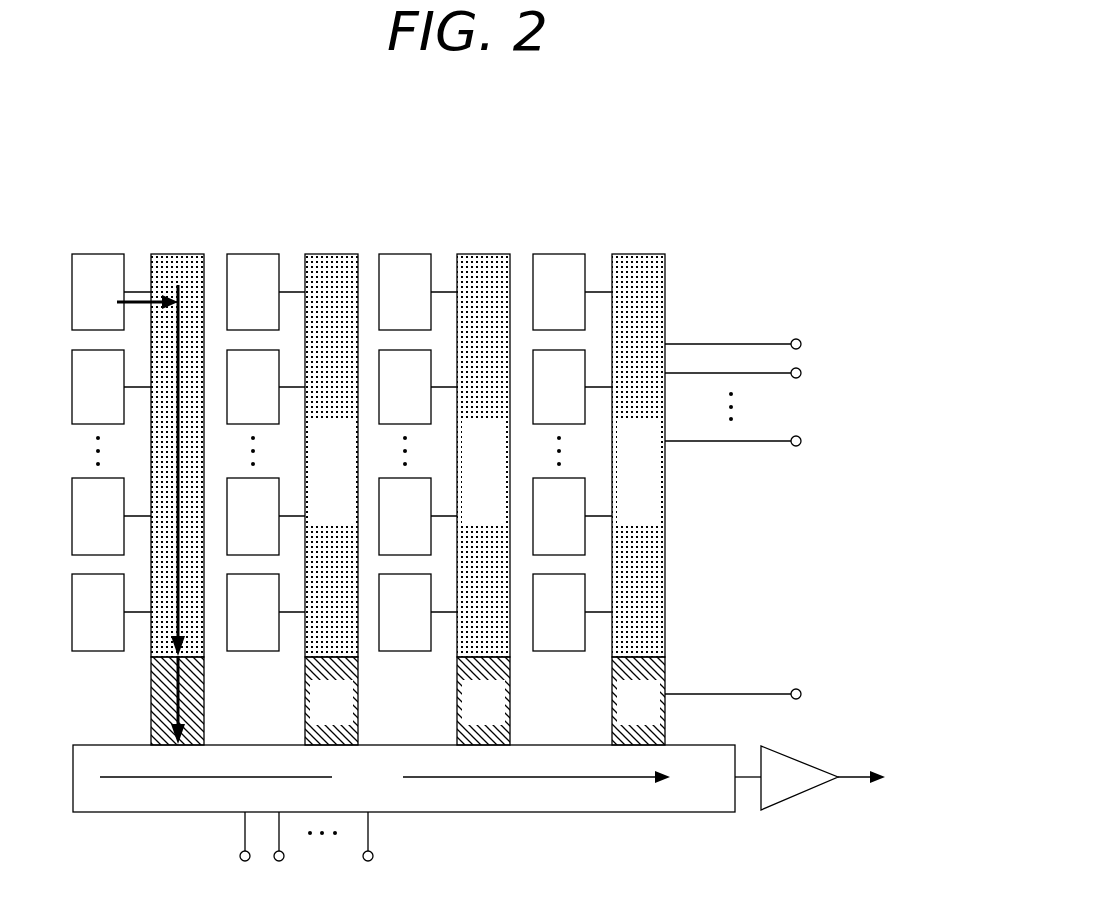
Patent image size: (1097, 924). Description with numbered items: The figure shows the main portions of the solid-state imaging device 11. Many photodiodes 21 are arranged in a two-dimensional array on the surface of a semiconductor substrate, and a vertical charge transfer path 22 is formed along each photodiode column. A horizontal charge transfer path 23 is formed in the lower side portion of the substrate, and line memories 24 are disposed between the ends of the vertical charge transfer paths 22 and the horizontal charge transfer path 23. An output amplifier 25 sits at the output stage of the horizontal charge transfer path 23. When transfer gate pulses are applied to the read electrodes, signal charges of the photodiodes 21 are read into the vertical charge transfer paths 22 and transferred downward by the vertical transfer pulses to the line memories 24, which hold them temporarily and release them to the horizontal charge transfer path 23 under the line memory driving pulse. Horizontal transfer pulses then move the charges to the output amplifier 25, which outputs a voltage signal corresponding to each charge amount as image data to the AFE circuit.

The solid-state imaging device 11 is at (285, 190).
The photodiode 21 is at (400, 262).
The vertical charge transfer path 22 is at (176, 257).
The horizontal charge transfer path 23 is at (507, 800).
The line memory 24 is at (163, 703).
The output amplifier 25 is at (793, 785).